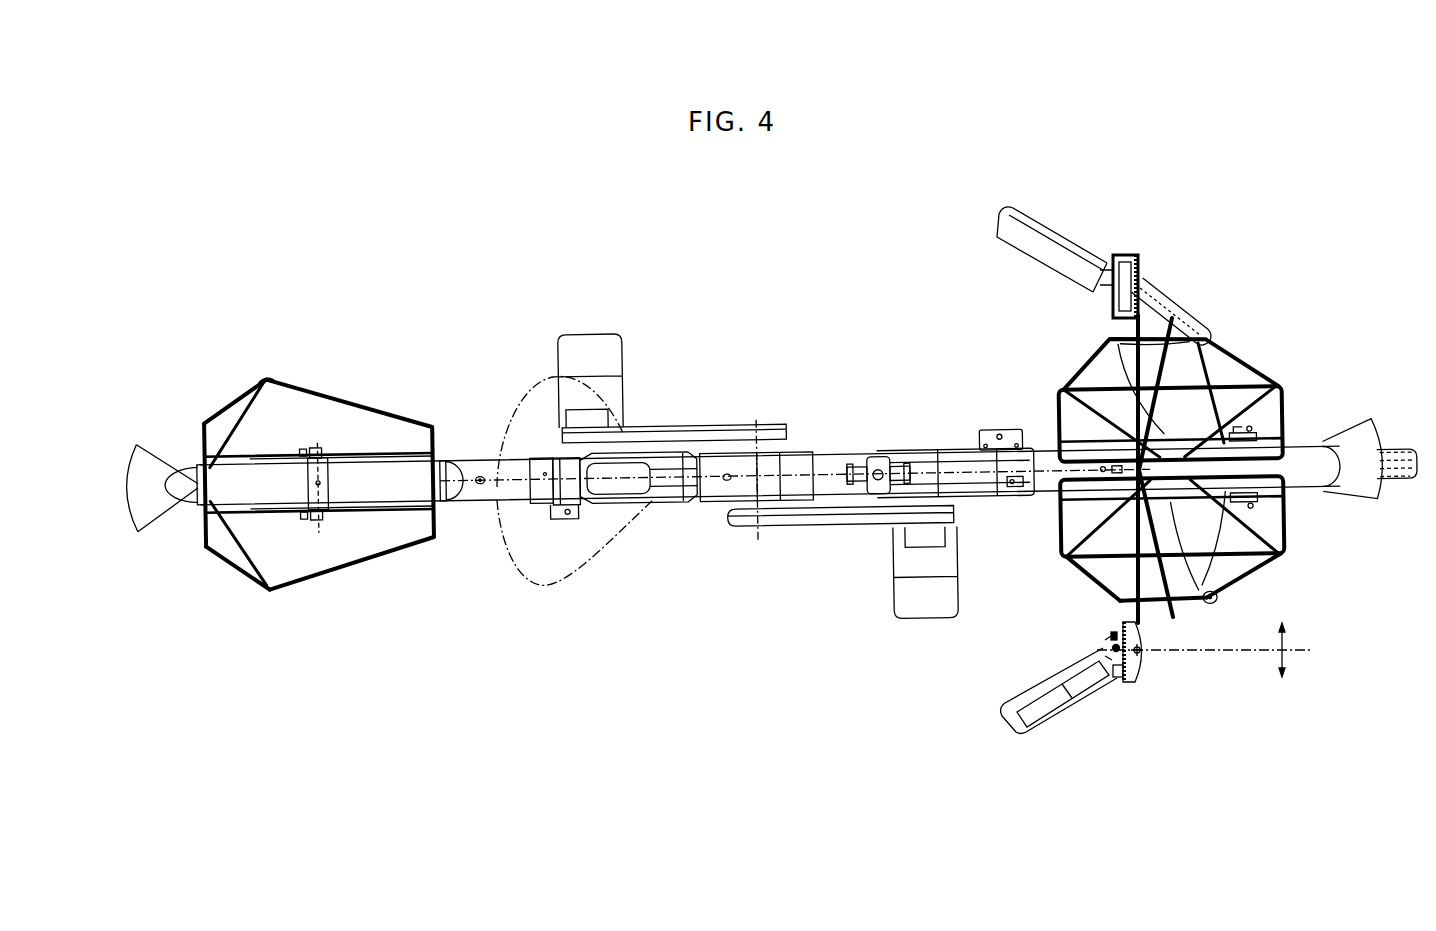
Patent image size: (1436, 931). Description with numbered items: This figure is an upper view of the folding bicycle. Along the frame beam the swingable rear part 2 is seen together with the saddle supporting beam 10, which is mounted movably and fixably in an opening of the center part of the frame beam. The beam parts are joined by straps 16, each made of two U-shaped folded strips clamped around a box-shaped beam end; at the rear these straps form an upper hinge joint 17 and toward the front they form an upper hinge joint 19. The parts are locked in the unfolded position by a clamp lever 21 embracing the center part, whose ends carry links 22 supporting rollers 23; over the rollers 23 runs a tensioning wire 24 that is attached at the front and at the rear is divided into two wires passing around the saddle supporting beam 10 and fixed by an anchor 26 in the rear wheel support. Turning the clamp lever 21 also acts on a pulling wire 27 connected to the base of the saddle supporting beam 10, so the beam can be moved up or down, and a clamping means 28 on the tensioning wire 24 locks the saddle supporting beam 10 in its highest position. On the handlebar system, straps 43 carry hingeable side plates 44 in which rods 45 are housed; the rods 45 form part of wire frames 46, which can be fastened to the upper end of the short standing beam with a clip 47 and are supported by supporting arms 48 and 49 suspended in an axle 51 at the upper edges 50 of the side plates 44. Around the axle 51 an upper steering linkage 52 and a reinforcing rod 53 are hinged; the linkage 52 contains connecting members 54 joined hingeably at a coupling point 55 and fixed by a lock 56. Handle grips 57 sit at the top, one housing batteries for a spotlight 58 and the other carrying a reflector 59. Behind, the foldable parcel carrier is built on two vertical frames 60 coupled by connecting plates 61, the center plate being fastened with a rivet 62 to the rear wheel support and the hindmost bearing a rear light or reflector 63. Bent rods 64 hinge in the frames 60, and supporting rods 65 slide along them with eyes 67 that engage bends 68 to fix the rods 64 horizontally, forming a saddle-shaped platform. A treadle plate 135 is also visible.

The rear part 2 is at (477, 517).
The saddle supporting beam 10 is at (627, 467).
The straps 16 is at (560, 487).
The hinge joint 17 is at (567, 513).
The upper hinge joint 19 is at (1000, 437).
The clamp lever 21 is at (952, 443).
The links 22 is at (890, 463).
The rollers 23 is at (865, 485).
The tensioning wire 24 is at (927, 470).
The anchor 26 is at (482, 480).
The pulling wire 27 is at (767, 473).
The clamping means 28 is at (567, 477).
The straps 43 is at (1227, 437).
The side plates 44 is at (1182, 382).
The rods 45 is at (1245, 385).
The frames 46 is at (1283, 428).
The clip 47 is at (1240, 492).
The supporting arm 48 is at (1093, 575).
The supporting arm 49 is at (1243, 572).
The upper edges 50 is at (1150, 663).
The axle 51 is at (1210, 597).
The upper steering linkage 52 is at (1160, 297).
The reinforcing rod 53 is at (1130, 605).
The connecting members 54 is at (1202, 336).
The coupling point 55 is at (1105, 470).
The lock 56 is at (1110, 475).
The handle grips 57 is at (1043, 223).
The spotlight 58 is at (1140, 660).
The reflector 59 is at (1137, 270).
The frames 60 is at (383, 457).
The connecting plates 61 is at (190, 473).
The rivet 62 is at (318, 490).
The rear light or reflector 63 is at (195, 492).
The bent rods 64 is at (297, 390).
The supporting rods 65 is at (240, 550).
The eyes 67 is at (273, 378).
The bend 68 is at (257, 380).
The treadle plate 135 is at (592, 388).